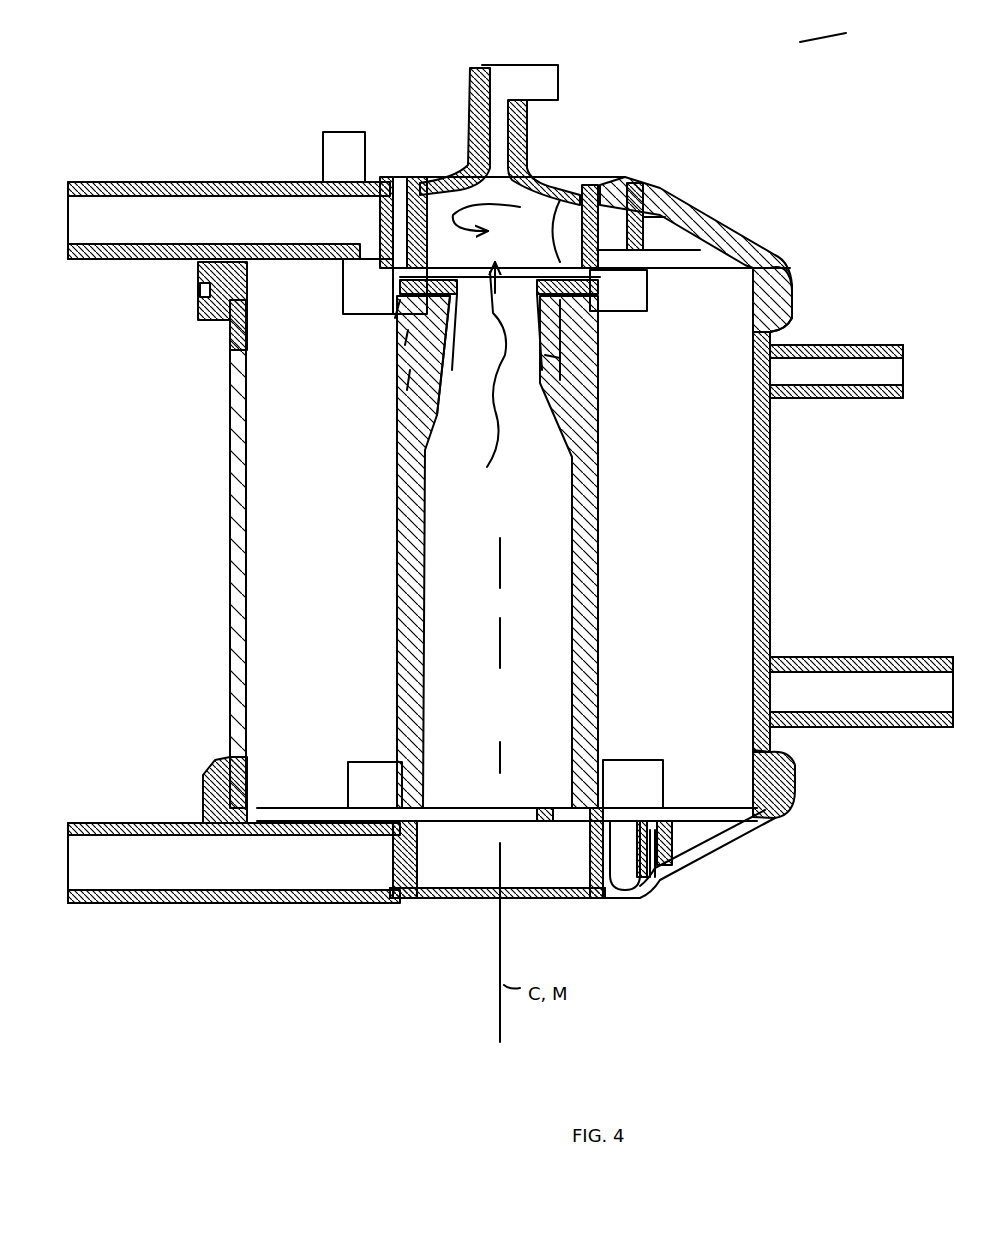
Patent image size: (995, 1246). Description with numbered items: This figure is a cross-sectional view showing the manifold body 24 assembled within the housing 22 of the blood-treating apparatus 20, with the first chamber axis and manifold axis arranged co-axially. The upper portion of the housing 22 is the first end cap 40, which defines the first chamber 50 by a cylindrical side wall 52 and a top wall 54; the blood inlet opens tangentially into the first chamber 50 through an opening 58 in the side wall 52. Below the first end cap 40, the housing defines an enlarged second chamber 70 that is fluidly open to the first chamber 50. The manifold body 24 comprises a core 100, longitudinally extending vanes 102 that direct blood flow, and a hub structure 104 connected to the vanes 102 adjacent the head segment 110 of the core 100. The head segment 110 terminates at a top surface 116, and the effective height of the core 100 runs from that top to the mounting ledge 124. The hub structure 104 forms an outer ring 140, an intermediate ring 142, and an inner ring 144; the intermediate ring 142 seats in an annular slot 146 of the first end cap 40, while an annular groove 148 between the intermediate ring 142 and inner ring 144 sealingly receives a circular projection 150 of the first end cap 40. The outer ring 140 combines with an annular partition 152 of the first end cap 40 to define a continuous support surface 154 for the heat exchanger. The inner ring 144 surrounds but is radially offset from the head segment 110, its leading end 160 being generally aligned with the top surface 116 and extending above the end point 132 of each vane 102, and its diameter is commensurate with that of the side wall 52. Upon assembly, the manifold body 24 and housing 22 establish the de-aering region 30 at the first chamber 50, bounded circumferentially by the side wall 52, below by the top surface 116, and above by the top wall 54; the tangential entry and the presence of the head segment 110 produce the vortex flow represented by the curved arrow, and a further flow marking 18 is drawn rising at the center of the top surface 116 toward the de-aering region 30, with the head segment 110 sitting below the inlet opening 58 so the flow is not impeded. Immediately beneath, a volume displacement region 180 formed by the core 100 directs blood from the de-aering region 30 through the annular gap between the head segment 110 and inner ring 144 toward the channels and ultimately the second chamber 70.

The apparatus 20 is at (823, 28).
The housing 22 is at (223, 618).
The manifold body 24 is at (393, 655).
The de-aering region 30 is at (485, 378).
The first end cap 40 is at (740, 217).
The first chamber 50 is at (543, 203).
The side wall 52 is at (424, 235).
The top wall 54 is at (460, 165).
The opening 58 is at (585, 236).
The second chamber 70 is at (707, 563).
The core 100 is at (605, 512).
The vanes 102 is at (397, 477).
The hub structure 104 is at (580, 330).
The head segment 110 is at (560, 358).
The top surface 116 is at (470, 285).
The flow direction 18 is at (507, 273).
The mounting ledge 124 is at (607, 760).
The end point 132 is at (437, 415).
The outer ring 140 is at (377, 320).
The intermediate ring 142 is at (405, 347).
The inner ring 144 is at (407, 390).
The annular slot 146 is at (410, 262).
The annular groove 148 is at (605, 295).
The circular projection 150 is at (710, 207).
The annular partition 152 is at (398, 272).
The support surface 154 is at (343, 313).
The leading end 160 is at (430, 267).
The volume displacement region 180 is at (675, 240).